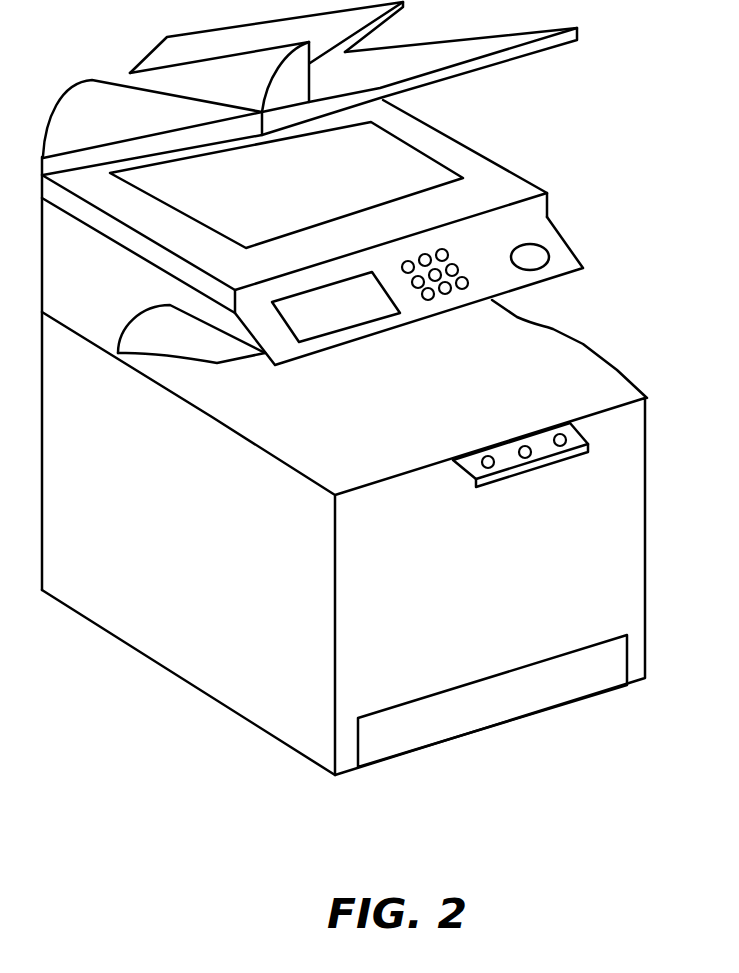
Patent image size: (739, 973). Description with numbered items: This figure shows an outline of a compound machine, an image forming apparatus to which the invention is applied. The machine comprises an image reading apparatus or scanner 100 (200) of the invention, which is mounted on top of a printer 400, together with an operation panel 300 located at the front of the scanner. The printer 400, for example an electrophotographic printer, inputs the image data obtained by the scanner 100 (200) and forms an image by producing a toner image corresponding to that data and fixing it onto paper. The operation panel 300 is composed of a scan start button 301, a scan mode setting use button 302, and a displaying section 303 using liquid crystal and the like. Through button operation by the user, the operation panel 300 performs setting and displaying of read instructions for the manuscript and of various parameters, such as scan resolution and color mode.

The image reading apparatus 100 is at (318, 296).
The image reading apparatus 200 is at (462, 150).
The operation panel 300 is at (445, 294).
The scan start button 301 is at (539, 246).
The scan mode setting use button 302 is at (429, 301).
The displaying section 303 is at (354, 313).
The printer 400 is at (640, 384).